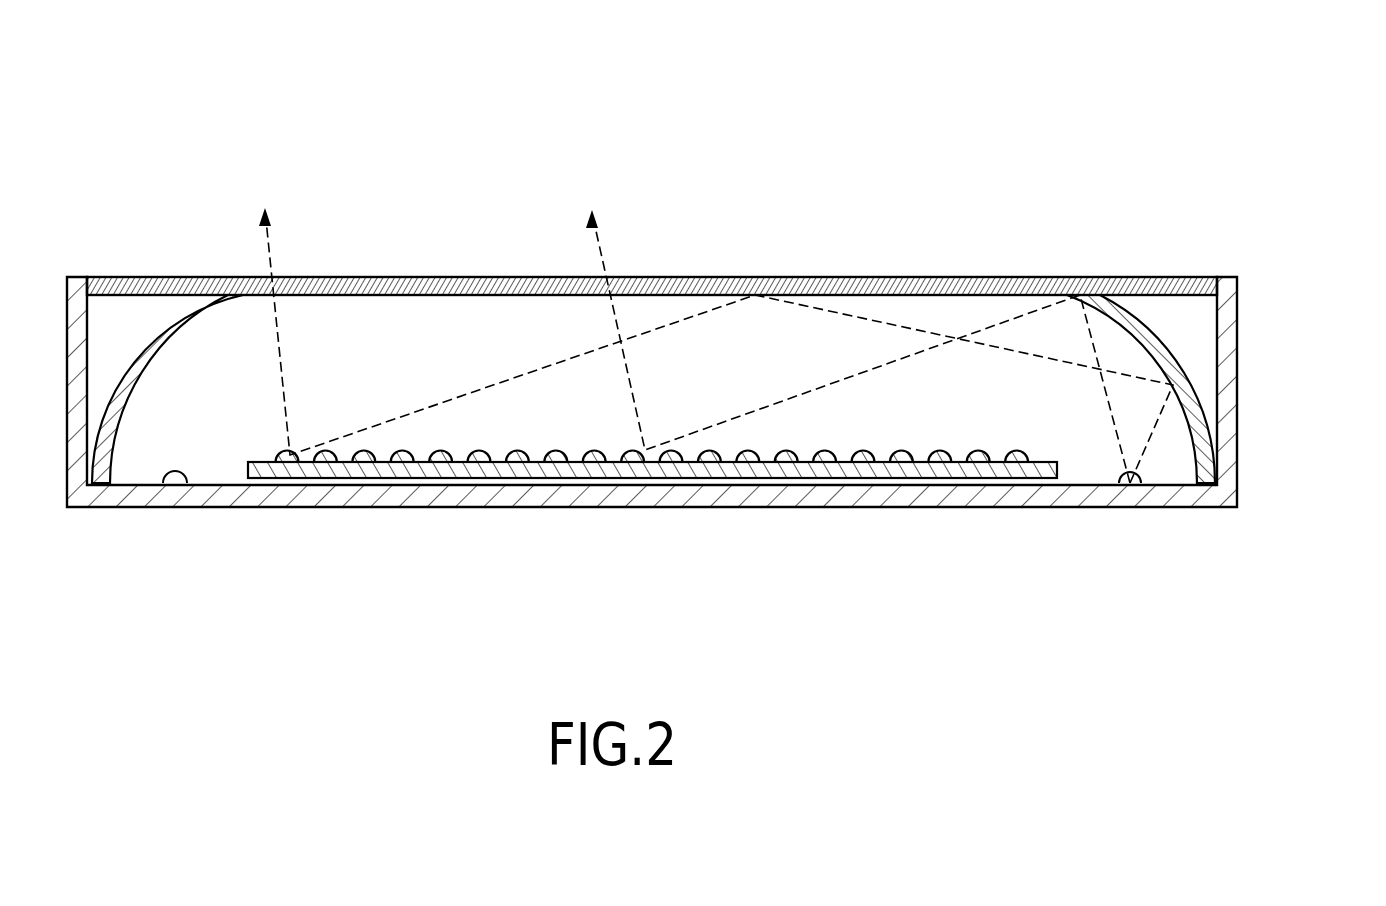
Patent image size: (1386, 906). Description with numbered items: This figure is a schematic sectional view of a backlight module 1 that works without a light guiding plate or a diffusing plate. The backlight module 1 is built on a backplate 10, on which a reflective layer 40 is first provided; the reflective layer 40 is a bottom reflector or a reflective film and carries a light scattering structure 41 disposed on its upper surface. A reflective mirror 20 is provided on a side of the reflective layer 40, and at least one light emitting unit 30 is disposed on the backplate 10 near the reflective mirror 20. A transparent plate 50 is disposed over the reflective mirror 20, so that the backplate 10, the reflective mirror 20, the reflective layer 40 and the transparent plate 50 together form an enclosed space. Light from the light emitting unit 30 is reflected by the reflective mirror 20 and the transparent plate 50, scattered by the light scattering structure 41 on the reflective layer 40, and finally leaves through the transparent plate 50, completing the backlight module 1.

The backlight module 1 is at (726, 318).
The backplate 10 is at (1217, 495).
The reflective mirror 20 is at (1200, 372).
The light emitting unit 30 is at (1125, 478).
The reflective layer 40 is at (967, 468).
The light scattering structure 41 is at (927, 426).
The transparent plate 50 is at (923, 277).